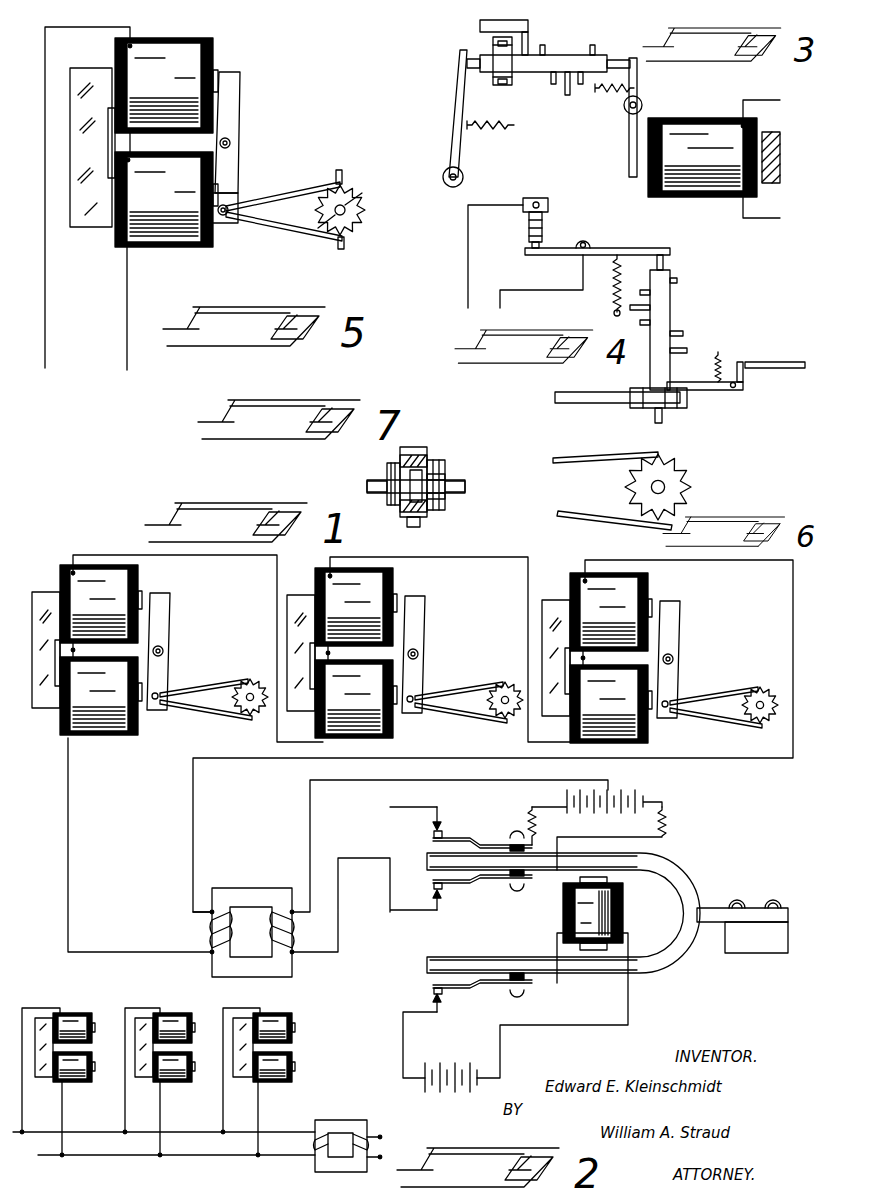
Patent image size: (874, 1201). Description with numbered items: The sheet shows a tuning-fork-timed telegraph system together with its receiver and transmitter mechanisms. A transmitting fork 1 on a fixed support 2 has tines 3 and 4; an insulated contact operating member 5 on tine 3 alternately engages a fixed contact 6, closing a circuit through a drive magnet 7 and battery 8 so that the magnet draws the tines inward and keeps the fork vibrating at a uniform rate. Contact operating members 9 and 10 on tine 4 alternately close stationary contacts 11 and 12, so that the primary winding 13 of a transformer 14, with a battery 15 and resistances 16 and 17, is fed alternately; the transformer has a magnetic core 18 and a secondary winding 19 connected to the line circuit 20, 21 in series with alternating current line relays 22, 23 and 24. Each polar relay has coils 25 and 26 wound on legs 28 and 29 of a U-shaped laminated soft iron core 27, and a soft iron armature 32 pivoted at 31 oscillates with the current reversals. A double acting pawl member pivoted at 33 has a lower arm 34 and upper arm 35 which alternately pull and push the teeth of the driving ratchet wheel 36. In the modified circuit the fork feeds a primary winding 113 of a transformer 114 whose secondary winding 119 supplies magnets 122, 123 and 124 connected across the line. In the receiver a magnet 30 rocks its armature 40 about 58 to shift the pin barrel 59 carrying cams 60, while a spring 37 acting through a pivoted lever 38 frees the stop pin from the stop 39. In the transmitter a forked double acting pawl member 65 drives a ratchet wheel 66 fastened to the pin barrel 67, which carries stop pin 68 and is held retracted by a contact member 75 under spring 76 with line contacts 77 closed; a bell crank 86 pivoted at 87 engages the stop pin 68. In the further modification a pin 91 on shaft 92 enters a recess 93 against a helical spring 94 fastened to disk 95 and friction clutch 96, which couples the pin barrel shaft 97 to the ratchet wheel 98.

In FIG. 2, the transmitting fork 1 is at (607, 922).
In FIG. 2, the fixed support 2 is at (755, 950).
In FIG. 2, the tine 3 is at (667, 965).
In FIG. 2, the tine 4 is at (675, 872).
In FIG. 2, the insulated contact operating member 5 is at (487, 988).
In FIG. 2, the fixed contact 6 is at (430, 990).
In FIG. 2, the drive magnet 7 is at (580, 915).
In FIG. 2, the battery 8 is at (473, 1063).
In FIG. 2, the insulated contact operating member 9 is at (490, 838).
In FIG. 2, the insulated contact operating member 10 is at (488, 885).
In FIG. 2, the stationary contact 11 is at (445, 812).
In FIG. 2, the stationary contact 12 is at (445, 908).
In FIG. 2, the primary winding 13 is at (292, 935).
In FIG. 2, the transformer 14 is at (245, 905).
In FIG. 2, the battery 15 is at (645, 795).
In FIG. 2, the resistance 16 is at (540, 818).
In FIG. 2, the resistance 17 is at (670, 818).
In FIG. 2, the magnetic core 18 is at (239, 908).
In FIG. 2, the secondary winding 19 is at (210, 930).
In FIG. 2, the line circuit 20 is at (122, 952).
In FIG. 2, the line circuit 21 is at (192, 871).
In FIG. 2, the alternating current line relay 22 is at (548, 600).
In FIG. 2, the alternating current line relay 23 is at (300, 595).
In FIG. 2, the alternating current line relay 24 is at (45, 590).
In FIG. 5, the coil 25 is at (164, 73).
In FIG. 2, the coil 25 is at (357, 590).
In FIG. 5, the coil 26 is at (210, 247).
In FIG. 2, the coil 26 is at (372, 702).
In FIG. 5, the U-shaped laminated soft iron core 27 is at (93, 140).
In FIG. 2, the U-shaped laminated soft iron core 27 is at (545, 652).
In FIG. 5, the leg 28 is at (110, 88).
In FIG. 2, the leg 28 is at (580, 614).
In FIG. 5, the leg 29 is at (178, 210).
In FIG. 2, the leg 29 is at (578, 707).
In FIG. 3, the magnet 30 is at (690, 128).
In FIG. 5, the pivot 31 is at (231, 143).
In FIG. 2, the pivot 31 is at (164, 651).
In FIG. 5, the soft iron armature 32 is at (232, 118).
In FIG. 2, the soft iron armature 32 is at (172, 633).
In FIG. 5, the pivot 33 is at (230, 206).
In FIG. 2, the pivot 33 is at (164, 693).
In FIG. 5, the lower arm 34 is at (277, 228).
In FIG. 6, the lower arm 34 is at (598, 512).
In FIG. 2, the lower arm 34 is at (212, 717).
In FIG. 5, the upper arm 35 is at (285, 194).
In FIG. 6, the upper arm 35 is at (606, 453).
In FIG. 2, the upper arm 35 is at (220, 683).
In FIG. 5, the driving ratchet wheel 36 is at (355, 198).
In FIG. 6, the driving ratchet wheel 36 is at (683, 487).
In FIG. 2, the driving ratchet wheel 36 is at (252, 683).
In FIG. 3, the spring 37 is at (490, 120).
In FIG. 3, the pivoted lever 38 is at (459, 97).
In FIG. 3, the stop 39 is at (501, 21).
In FIG. 3, the armature 40 is at (629, 138).
In FIG. 3, the pivot 58 is at (642, 100).
In FIG. 3, the pin barrel 59 is at (600, 55).
In FIG. 3, the cams 60 is at (568, 53).
In FIG. 4, the forked double acting pawl member 65 is at (597, 395).
In FIG. 4, the driving ratchet wheel 66 is at (680, 406).
In FIG. 4, the pin barrel 67 is at (672, 328).
In FIG. 4, the stop pin 68 is at (707, 384).
In FIG. 4, the contact member 75 is at (628, 250).
In FIG. 4, the spring 76 is at (612, 288).
In FIG. 4, the line contacts 77 is at (548, 232).
In FIG. 4, the bell crank 86 is at (727, 358).
In FIG. 4, the pivot 87 is at (740, 394).
In FIG. 1, the pin 91 is at (432, 458).
In FIG. 1, the shaft 92 is at (465, 482).
In FIG. 1, the recess 93 is at (440, 478).
In FIG. 1, the helical spring 94 is at (418, 458).
In FIG. 1, the disk 95 is at (440, 465).
In FIG. 1, the friction clutch 96 is at (437, 500).
In FIG. 1, the pin barrel shaft 97 is at (383, 478).
In FIG. 1, the ratchet wheel 98 is at (420, 525).
In FIG. 2, the primary winding 113 is at (380, 1137).
In FIG. 2, the transformer 114 is at (362, 1127).
In FIG. 2, the secondary winding 119 is at (325, 1125).
In FIG. 2, the magnet 122 is at (300, 1022).
In FIG. 2, the magnet 123 is at (180, 1022).
In FIG. 2, the magnet 124 is at (75, 1018).